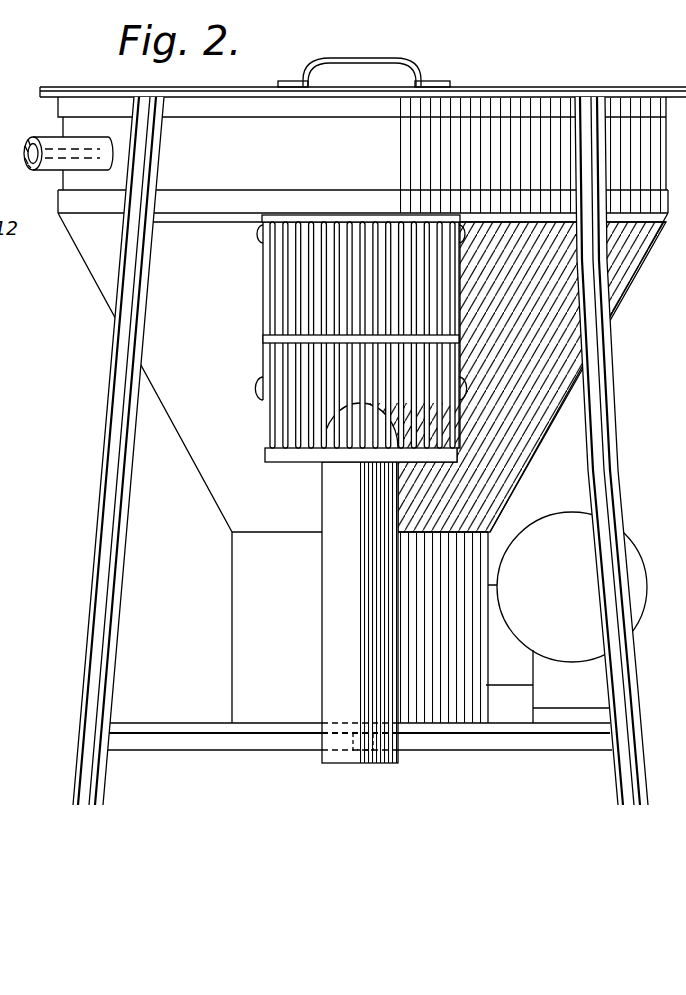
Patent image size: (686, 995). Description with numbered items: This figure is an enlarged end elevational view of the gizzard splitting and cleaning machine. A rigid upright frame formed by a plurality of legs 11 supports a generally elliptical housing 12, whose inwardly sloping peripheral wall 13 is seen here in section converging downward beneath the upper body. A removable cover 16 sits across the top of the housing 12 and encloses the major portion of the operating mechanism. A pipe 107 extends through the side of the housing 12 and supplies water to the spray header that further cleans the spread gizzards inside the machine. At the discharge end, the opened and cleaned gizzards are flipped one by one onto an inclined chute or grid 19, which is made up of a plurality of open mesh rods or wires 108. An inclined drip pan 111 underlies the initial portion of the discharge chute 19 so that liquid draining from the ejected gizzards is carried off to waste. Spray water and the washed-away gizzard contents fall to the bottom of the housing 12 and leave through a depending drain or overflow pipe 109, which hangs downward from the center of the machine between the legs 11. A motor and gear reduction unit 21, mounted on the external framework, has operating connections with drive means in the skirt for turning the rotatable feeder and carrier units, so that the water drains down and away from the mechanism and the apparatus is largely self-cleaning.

The removable cover 16 is at (504, 82).
The pipe 107 is at (48, 137).
The legs 11 is at (90, 640).
The housing 12 is at (209, 504).
The open mesh rods or wires 108 is at (322, 302).
The inclined drip pan 111 is at (265, 355).
The inclined chute or grid 19 is at (475, 312).
The inwardly sloping peripheral wall 13 is at (486, 490).
The motor and gear reduction unit 21 is at (568, 507).
The drain or overflow pipe 109 is at (322, 622).